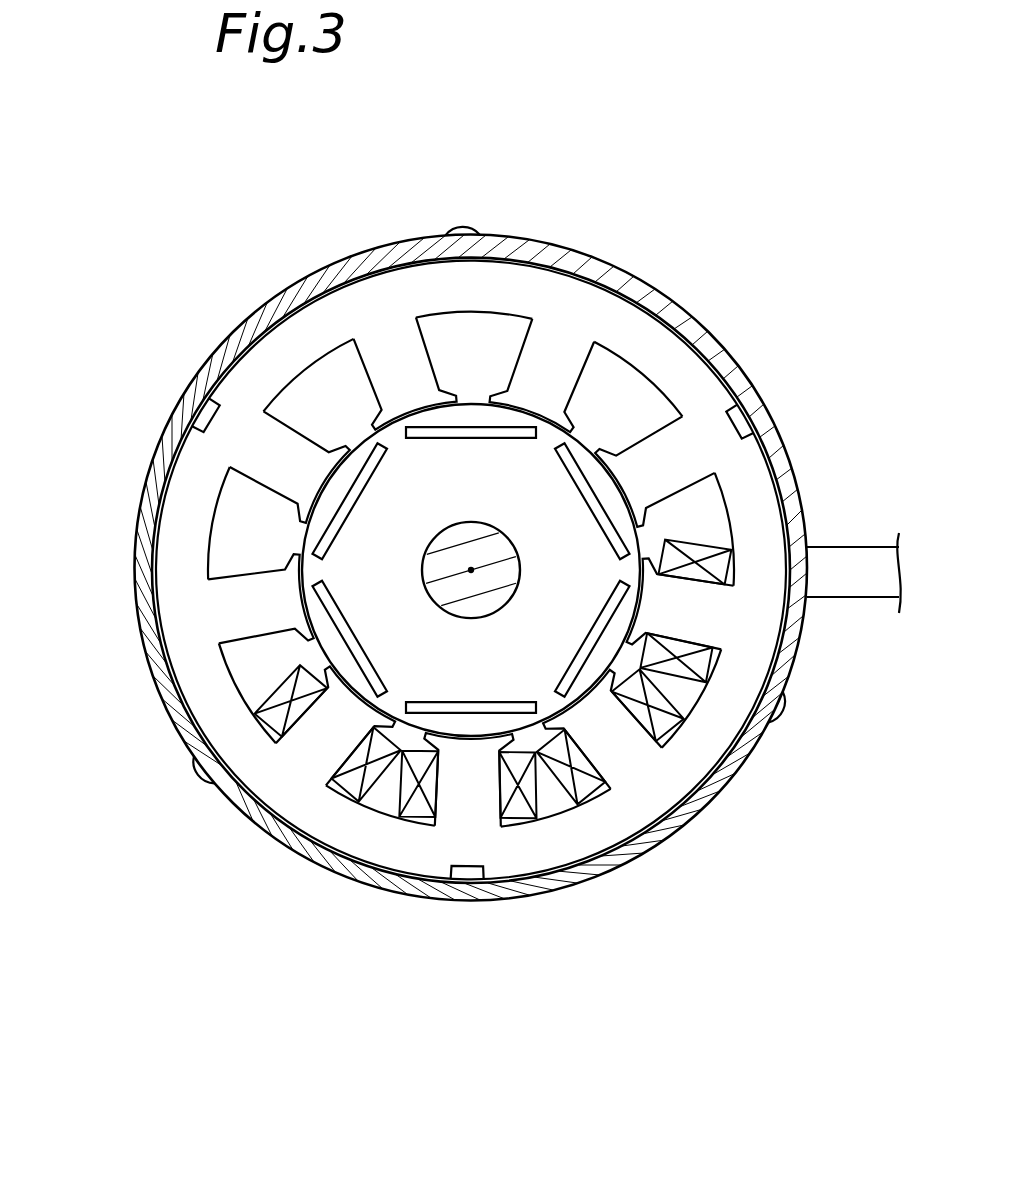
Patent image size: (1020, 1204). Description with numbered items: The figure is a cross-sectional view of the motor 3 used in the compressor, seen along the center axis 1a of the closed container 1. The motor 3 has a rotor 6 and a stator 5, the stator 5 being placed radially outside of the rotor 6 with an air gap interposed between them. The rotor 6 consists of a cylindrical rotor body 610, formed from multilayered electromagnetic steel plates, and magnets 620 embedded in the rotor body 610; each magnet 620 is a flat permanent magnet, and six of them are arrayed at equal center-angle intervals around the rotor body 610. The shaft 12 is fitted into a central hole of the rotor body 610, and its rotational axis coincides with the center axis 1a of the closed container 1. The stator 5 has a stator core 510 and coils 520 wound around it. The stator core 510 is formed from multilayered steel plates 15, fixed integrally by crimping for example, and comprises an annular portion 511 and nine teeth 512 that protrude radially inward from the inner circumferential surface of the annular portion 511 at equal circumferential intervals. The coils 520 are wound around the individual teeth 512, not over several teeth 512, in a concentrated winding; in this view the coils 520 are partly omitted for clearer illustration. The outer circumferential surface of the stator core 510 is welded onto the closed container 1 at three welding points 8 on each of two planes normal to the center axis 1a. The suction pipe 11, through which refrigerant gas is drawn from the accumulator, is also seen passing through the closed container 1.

The closed container 1 is at (587, 250).
The center axis 1a is at (473, 568).
The motor 3 is at (273, 343).
The stator 5 is at (229, 371).
The rotor 6 is at (468, 405).
The welding points 8 is at (461, 228).
The suction pipe 11 is at (858, 562).
The shaft 12 is at (465, 600).
The steel plates 15 is at (162, 500).
The stator core 510 is at (156, 571).
The annular portion 511 is at (178, 616).
The teeth 512 is at (238, 668).
The coils 520 is at (285, 705).
The rotor body 610 is at (500, 678).
The magnets 620 is at (510, 428).